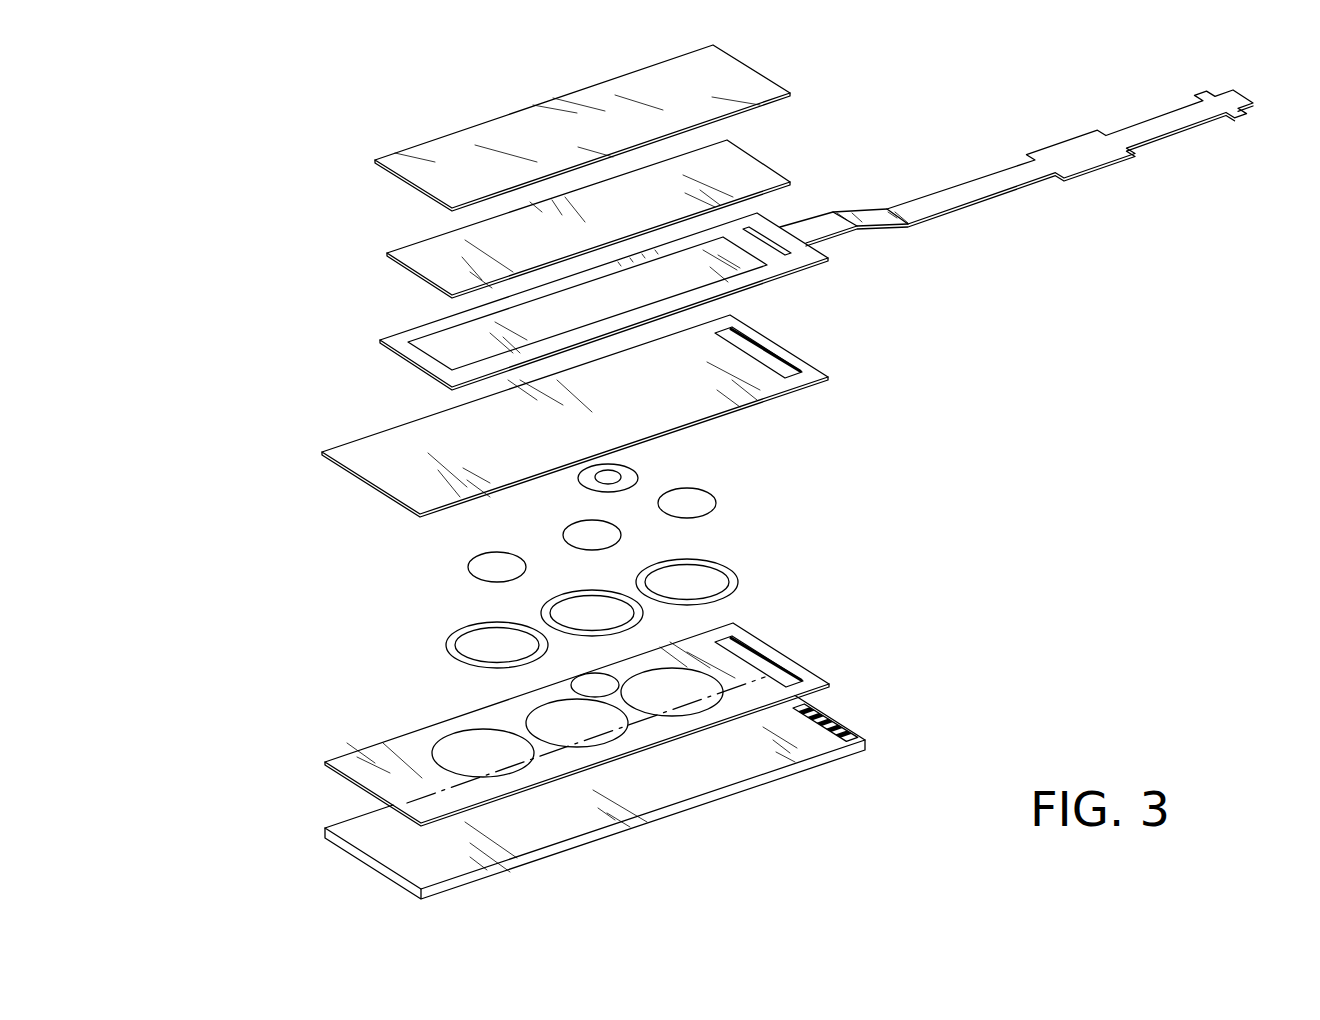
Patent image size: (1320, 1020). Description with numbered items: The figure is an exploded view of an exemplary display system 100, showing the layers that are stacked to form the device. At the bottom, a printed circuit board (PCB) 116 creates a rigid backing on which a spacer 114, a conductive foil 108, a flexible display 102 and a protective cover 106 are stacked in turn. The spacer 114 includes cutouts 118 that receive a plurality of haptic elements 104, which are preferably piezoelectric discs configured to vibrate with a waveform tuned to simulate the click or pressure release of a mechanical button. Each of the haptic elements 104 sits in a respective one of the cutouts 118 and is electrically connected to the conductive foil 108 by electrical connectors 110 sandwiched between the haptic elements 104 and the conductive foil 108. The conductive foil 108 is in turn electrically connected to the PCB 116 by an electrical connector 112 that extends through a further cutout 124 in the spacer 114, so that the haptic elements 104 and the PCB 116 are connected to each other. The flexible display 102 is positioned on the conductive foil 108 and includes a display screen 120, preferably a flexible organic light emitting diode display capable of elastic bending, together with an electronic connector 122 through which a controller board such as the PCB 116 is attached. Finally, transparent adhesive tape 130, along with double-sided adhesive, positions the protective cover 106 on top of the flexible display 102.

The display system 100 is at (224, 163).
The flexible display 102 is at (773, 227).
The haptic elements 104 is at (643, 575).
The protective cover 106 is at (732, 87).
The conductive foil 108 is at (822, 367).
The electrical connectors 110 is at (672, 503).
The electrical connector 112 is at (630, 478).
The spacer 114 is at (618, 709).
The printed circuit board (PCB) 116 is at (705, 790).
The cutouts 118 is at (655, 698).
The display screen 120 is at (440, 347).
The electronic connector 122 is at (1070, 150).
The cutout 124 is at (597, 684).
The transparent adhesive tape 130 is at (731, 174).